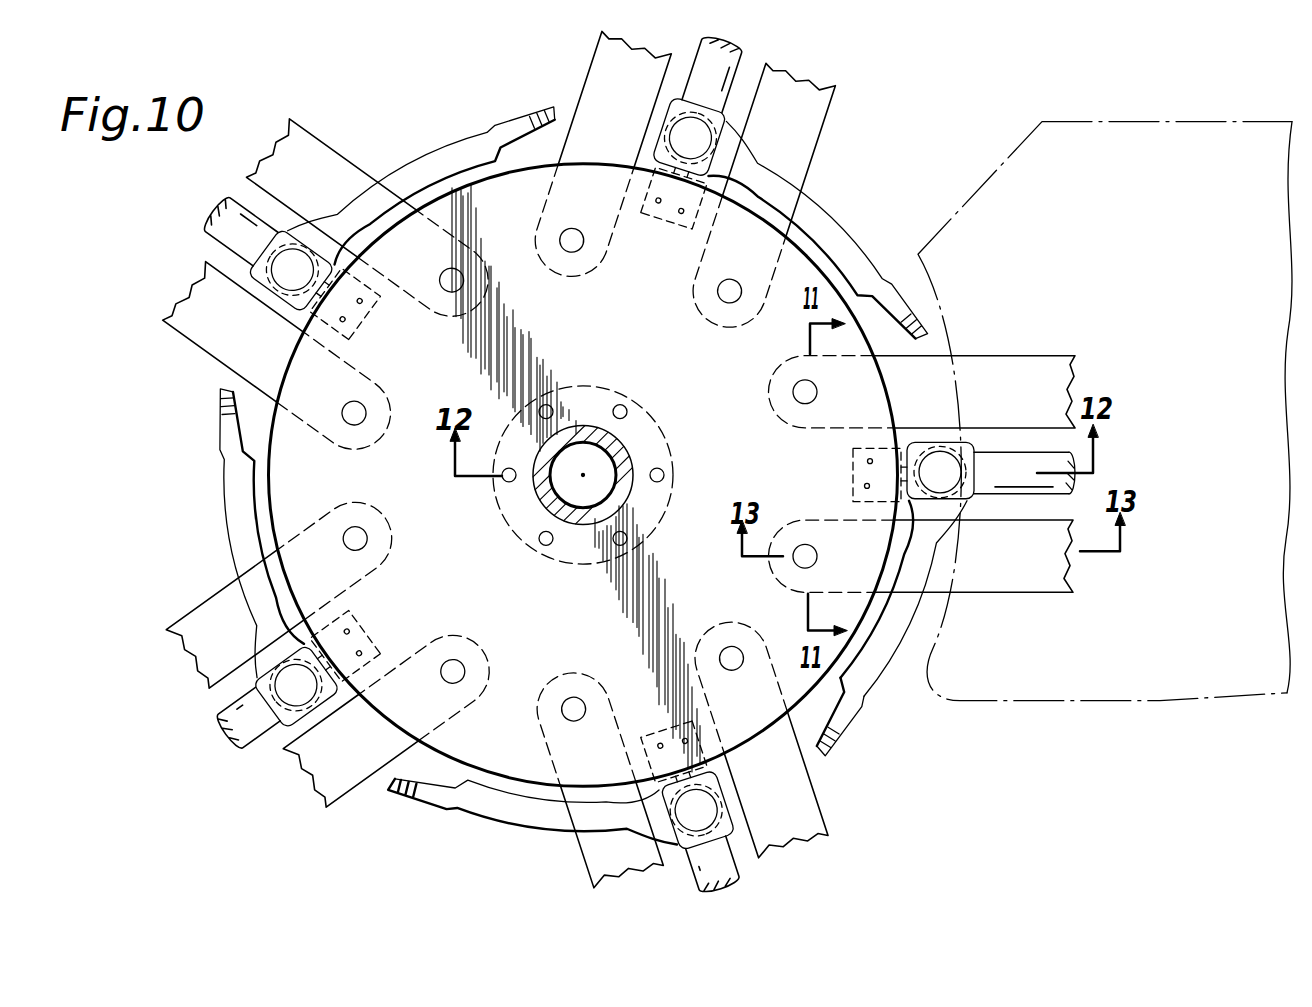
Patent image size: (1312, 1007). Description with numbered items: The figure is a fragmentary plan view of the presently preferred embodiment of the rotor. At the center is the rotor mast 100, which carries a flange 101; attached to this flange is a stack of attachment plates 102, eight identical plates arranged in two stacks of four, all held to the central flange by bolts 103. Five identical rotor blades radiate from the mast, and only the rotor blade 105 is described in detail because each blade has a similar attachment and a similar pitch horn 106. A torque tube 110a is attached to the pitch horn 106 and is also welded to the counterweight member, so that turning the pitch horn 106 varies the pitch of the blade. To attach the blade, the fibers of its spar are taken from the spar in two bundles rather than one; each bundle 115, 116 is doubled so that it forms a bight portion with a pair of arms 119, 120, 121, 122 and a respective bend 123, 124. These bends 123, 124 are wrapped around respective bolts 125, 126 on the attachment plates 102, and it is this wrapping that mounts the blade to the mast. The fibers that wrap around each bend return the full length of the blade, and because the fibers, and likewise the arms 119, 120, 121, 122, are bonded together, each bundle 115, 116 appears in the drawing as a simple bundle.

The rotor mast 100 is at (589, 424).
The flange 101 is at (672, 435).
The attachment plates 102 is at (577, 100).
The bolts 103 is at (623, 549).
The rotor blade 105 is at (1158, 690).
The pitch horn 106 is at (866, 706).
The torque tube 110a is at (1060, 450).
The bundle 115 is at (970, 354).
The bundle 116 is at (941, 597).
The arm 119 is at (890, 313).
The arm 120 is at (852, 430).
The arm 121 is at (1078, 495).
The arm 122 is at (1030, 594).
The bend 123 is at (775, 370).
The bend 124 is at (793, 596).
The bolt 125 is at (796, 401).
The bolt 126 is at (792, 566).